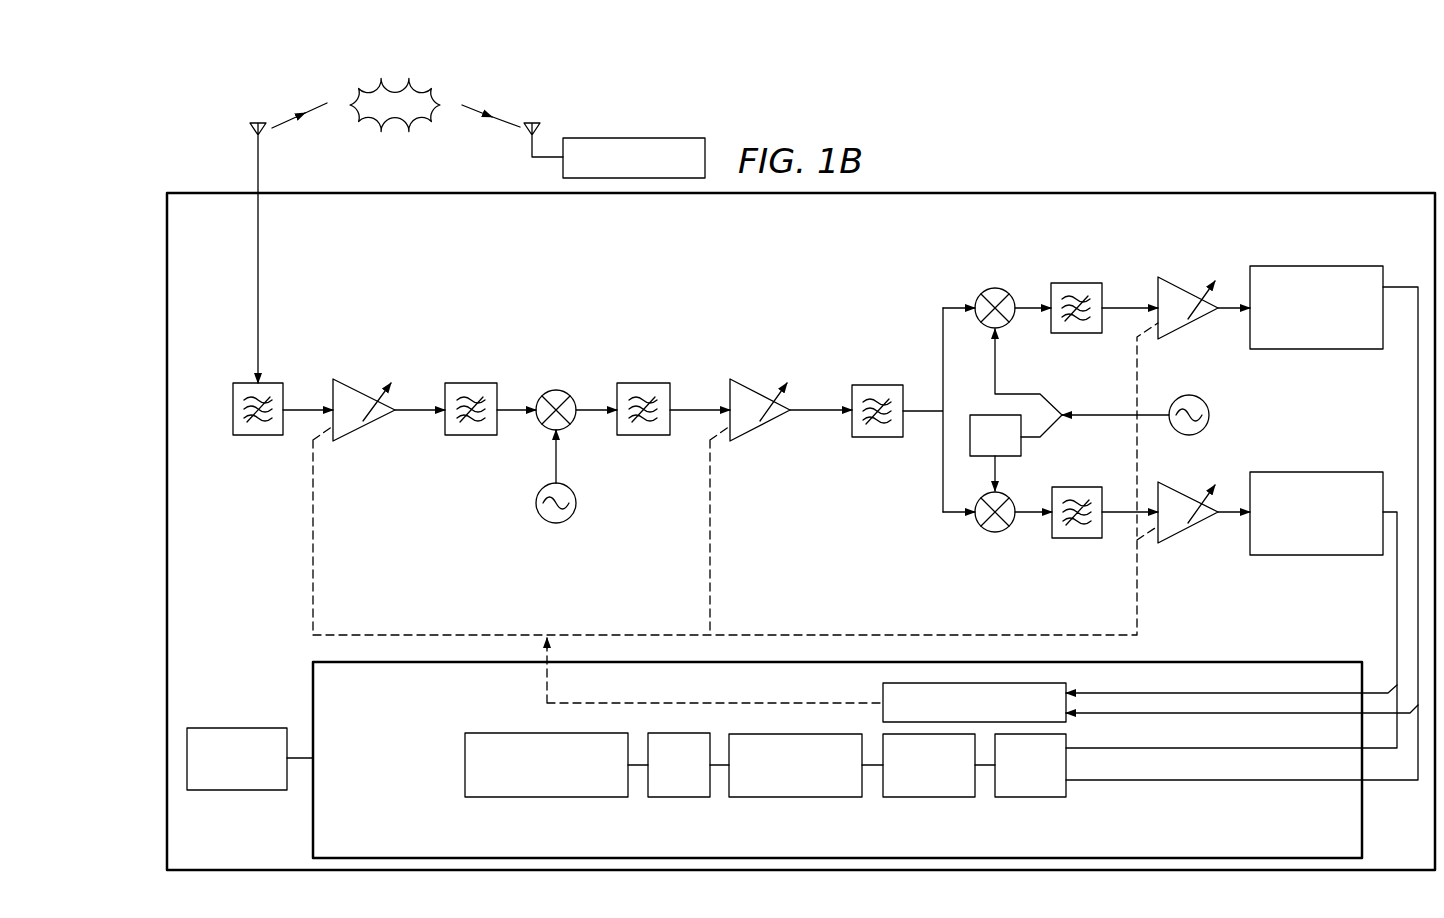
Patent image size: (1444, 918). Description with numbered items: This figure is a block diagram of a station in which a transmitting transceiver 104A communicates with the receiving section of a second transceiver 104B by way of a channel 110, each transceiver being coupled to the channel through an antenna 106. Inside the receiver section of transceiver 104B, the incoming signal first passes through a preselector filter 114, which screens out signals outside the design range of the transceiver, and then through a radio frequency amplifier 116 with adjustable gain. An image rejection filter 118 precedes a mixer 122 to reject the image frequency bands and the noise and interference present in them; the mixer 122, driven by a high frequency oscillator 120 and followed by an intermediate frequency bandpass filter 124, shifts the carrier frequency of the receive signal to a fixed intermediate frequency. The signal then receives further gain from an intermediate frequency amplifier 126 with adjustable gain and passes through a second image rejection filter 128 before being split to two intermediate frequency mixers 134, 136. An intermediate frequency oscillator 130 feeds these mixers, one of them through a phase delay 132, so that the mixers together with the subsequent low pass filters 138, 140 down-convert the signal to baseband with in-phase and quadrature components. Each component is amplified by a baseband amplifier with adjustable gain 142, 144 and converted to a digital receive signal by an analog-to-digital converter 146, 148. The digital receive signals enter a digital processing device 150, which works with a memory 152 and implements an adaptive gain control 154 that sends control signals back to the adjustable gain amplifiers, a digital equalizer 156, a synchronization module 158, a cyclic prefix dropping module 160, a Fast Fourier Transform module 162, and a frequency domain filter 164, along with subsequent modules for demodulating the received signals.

The transmitting transceiver 104A is at (630, 138).
The second transceiver 104B is at (1006, 190).
The antenna 106 is at (254, 128).
The channel 110 is at (350, 82).
The preselector filter 114 is at (250, 437).
The radio frequency amplifier 116 is at (370, 430).
The image rejection filter 118 is at (470, 437).
The high frequency oscillator 120 is at (536, 503).
The mixer 122 is at (545, 428).
The intermediate frequency bandpass filter 124 is at (643, 437).
The intermediate frequency amplifier 126 is at (768, 430).
The second image rejection filter 128 is at (877, 438).
The intermediate frequency oscillator 130 is at (1178, 396).
The phase delay 132 is at (978, 414).
The intermediate frequency mixer 134 is at (1008, 328).
The intermediate frequency mixer 136 is at (1032, 486).
The low pass filter 138 is at (1088, 335).
The low pass filter 140 is at (1088, 486).
The baseband amplifier 142 is at (1195, 325).
The baseband amplifier 144 is at (1178, 490).
The analog-to-digital converter 146 is at (1318, 266).
The analog-to-digital converter 148 is at (1320, 556).
The digital processing device 150 is at (311, 699).
The memory 152 is at (233, 791).
The adaptive gain control 154 is at (880, 692).
The digital equalizer 156 is at (1030, 798).
The synchronization module 158 is at (928, 798).
The cyclic prefix dropping module 160 is at (795, 798).
The Fast Fourier Transform module 162 is at (675, 798).
The frequency domain filter 164 is at (545, 798).